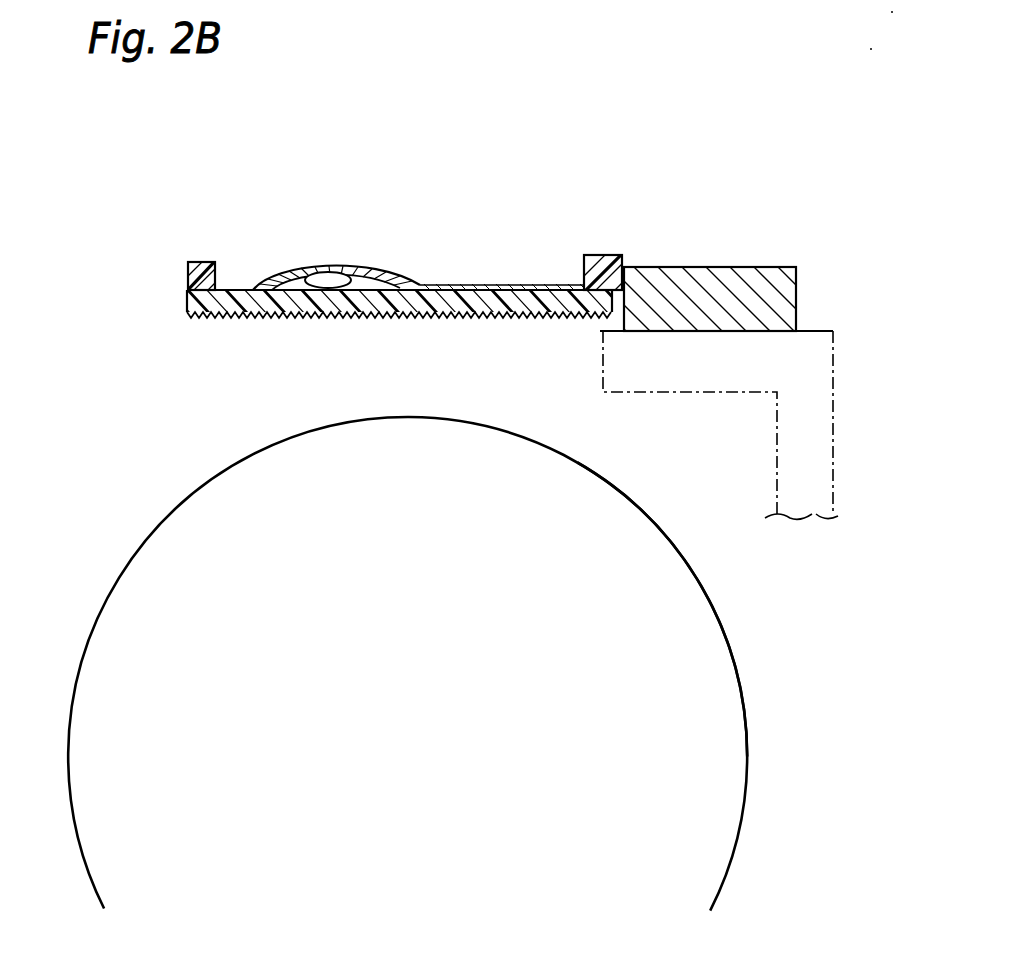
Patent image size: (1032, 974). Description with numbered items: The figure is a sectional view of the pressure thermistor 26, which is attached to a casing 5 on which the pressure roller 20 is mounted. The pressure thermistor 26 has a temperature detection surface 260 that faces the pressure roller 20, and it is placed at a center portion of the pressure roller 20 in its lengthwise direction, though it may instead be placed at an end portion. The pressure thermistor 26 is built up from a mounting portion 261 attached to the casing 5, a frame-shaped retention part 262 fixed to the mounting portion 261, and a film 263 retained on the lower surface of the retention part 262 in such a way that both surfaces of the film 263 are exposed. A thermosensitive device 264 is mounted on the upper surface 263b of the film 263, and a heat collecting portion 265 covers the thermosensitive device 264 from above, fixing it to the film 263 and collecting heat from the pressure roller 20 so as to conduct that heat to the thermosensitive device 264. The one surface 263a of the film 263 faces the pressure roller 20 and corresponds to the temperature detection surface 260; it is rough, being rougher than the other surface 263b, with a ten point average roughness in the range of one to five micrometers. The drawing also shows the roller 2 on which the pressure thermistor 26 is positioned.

The photosensitive drum 2 is at (747, 742).
The pressure roller 20 is at (617, 638).
The casing 5 is at (810, 448).
The pressure thermistor 26 is at (490, 251).
The temperature detection surface 260 is at (400, 356).
The mounting portion 261 is at (713, 282).
The retention part 262 is at (202, 260).
The film 263 is at (490, 295).
The one surface of the film 263a is at (268, 318).
The upper surface of the film 263b is at (230, 288).
The thermosensitive device 264 is at (328, 280).
The heat collecting portion 265 is at (388, 268).